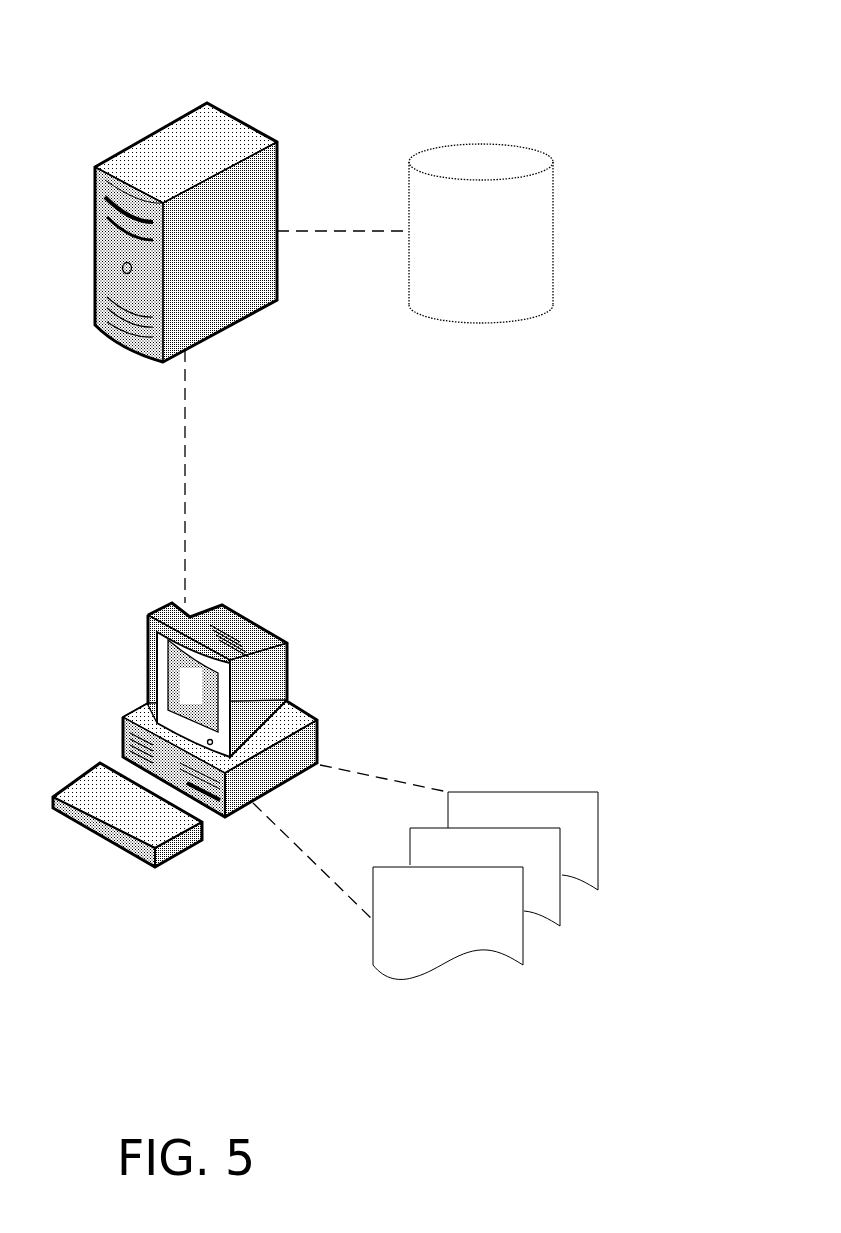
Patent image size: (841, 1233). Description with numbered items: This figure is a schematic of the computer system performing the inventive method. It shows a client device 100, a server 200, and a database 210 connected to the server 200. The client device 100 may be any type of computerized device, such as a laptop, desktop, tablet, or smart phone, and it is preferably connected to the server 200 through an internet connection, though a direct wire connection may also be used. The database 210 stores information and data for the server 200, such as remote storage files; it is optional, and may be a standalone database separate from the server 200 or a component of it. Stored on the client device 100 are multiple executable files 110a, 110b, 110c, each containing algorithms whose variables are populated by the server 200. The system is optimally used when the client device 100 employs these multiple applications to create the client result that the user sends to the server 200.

The server 200 is at (277, 158).
The database 210 is at (553, 197).
The client device 100 is at (287, 695).
The executable file 110a is at (523, 949).
The executable file 110b is at (560, 923).
The executable file 110c is at (598, 810).